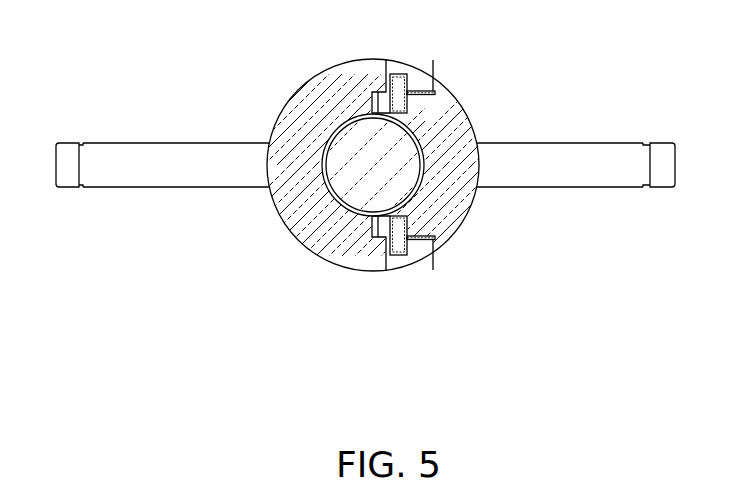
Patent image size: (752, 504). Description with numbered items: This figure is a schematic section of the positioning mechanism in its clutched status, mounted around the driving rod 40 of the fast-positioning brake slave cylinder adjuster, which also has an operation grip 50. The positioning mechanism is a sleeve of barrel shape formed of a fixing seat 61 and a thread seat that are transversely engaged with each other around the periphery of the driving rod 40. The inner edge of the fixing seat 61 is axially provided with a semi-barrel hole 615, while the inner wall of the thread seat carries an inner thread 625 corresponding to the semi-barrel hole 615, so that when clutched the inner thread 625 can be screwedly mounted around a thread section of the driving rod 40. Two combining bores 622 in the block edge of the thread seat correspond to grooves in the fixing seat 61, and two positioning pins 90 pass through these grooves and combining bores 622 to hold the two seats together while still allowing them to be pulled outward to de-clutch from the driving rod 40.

The driving rod 40 is at (357, 176).
The operation grip 50 is at (617, 153).
The fixing seat 61 is at (318, 92).
The semi-barrel hole 615 is at (321, 155).
The combining bore 622 is at (432, 90).
The inner thread 625 is at (403, 116).
The positioning pin 90 is at (395, 83).